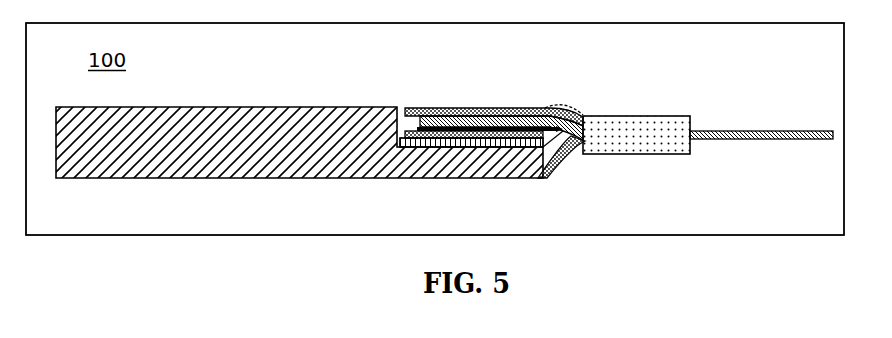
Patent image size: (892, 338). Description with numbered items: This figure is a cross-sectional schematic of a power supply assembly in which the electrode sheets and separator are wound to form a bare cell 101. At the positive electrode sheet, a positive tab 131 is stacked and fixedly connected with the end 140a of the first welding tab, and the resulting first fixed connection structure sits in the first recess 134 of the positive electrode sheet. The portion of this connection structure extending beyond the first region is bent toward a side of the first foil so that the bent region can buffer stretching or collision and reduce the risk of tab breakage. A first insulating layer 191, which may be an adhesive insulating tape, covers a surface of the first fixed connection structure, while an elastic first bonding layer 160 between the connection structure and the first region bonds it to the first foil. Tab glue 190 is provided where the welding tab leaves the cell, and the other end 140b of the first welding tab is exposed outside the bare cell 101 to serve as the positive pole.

The bare cell 101 is at (283, 107).
The first recess 134 is at (402, 118).
The positive tab 131 is at (425, 141).
The first bonding layer 160 is at (493, 143).
The first insulating layer 191 is at (447, 108).
The end of the first welding tab 140a is at (502, 122).
The tab glue 190 is at (640, 138).
The another end of the first welding tab 140b is at (743, 134).